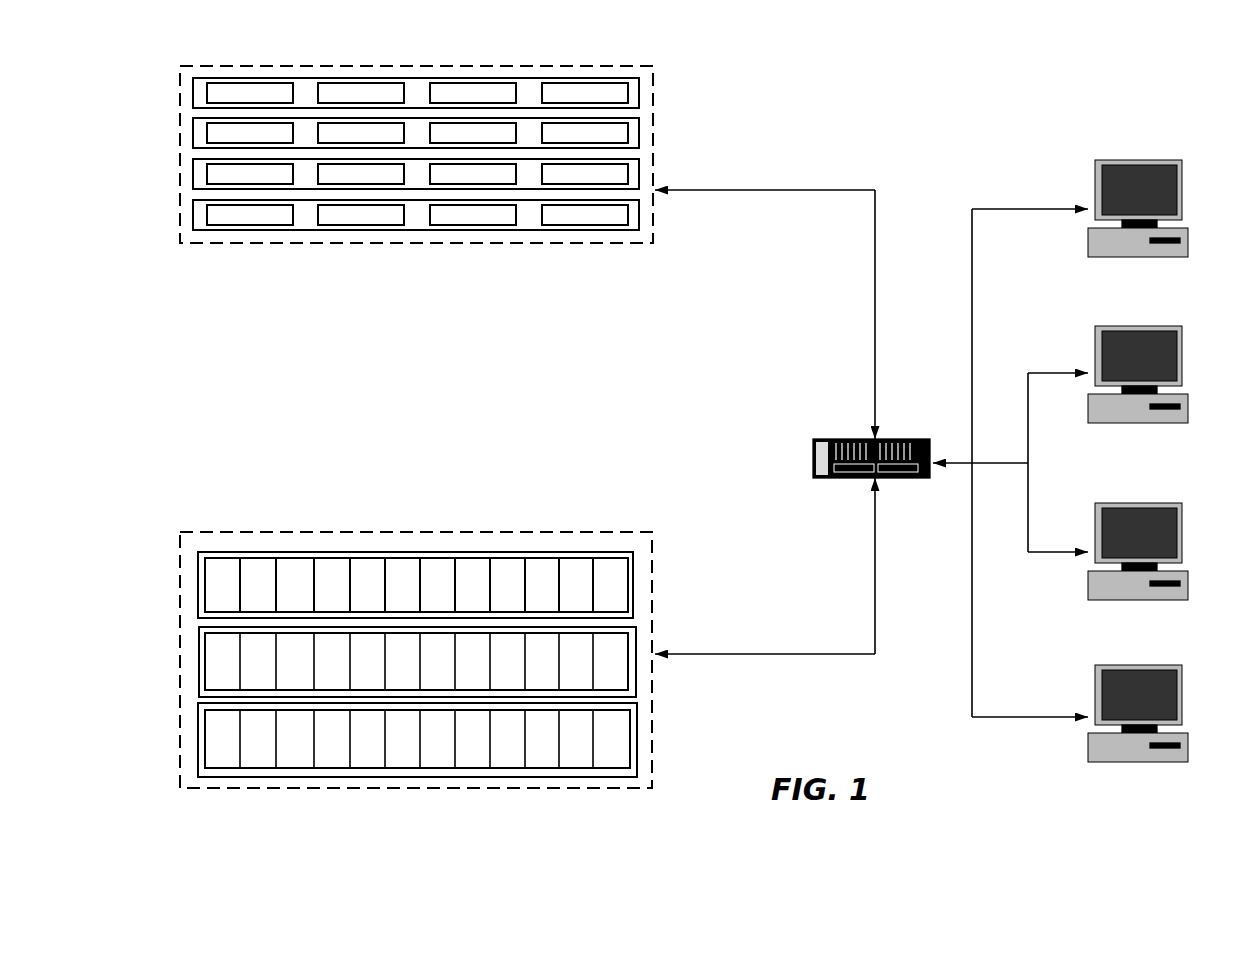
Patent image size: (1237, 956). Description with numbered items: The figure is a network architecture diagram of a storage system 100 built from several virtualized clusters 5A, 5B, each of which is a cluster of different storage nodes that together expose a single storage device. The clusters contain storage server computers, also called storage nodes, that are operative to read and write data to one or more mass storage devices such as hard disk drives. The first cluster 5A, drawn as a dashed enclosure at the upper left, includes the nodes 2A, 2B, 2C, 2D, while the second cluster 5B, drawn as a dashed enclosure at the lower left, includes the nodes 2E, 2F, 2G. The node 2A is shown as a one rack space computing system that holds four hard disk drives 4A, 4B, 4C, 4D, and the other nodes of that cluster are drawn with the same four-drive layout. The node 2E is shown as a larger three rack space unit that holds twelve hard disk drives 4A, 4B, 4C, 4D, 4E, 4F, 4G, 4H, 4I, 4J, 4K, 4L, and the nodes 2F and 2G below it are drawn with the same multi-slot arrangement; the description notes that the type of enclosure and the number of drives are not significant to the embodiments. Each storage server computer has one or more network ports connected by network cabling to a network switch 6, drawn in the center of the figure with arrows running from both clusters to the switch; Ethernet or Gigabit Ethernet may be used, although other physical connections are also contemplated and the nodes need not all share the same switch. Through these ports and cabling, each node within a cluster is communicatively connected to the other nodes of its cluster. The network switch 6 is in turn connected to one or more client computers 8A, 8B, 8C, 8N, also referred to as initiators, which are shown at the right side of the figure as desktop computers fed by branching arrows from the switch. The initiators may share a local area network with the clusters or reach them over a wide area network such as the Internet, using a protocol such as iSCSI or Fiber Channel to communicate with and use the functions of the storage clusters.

The storage system 100 is at (956, 100).
The virtualized cluster 5A is at (648, 92).
The virtualized cluster 5B is at (643, 552).
The storage server computer 2A is at (630, 103).
The storage server computer 2B is at (630, 146).
The storage server computer 2C is at (630, 188).
The storage server computer 2D is at (630, 229).
The storage server computer 2E is at (633, 572).
The storage server computer 2F is at (636, 636).
The storage server computer 2G is at (637, 712).
The hard disk drive 4A is at (212, 594).
The hard disk drive 4B is at (248, 594).
The hard disk drive 4C is at (285, 594).
The hard disk drive 4D is at (322, 594).
The hard disk drive 4E is at (378, 594).
The hard disk drive 4F is at (412, 594).
The hard disk drive 4G is at (448, 594).
The hard disk drive 4H is at (483, 594).
The hard disk drive 4I is at (514, 594).
The hard disk drive 4J is at (552, 594).
The hard disk drive 4K is at (586, 594).
The hard disk drive 4L is at (620, 594).
The network switch 6 is at (905, 479).
The client computer 8A is at (1172, 257).
The client computer 8B is at (1152, 397).
The client computer 8C is at (1152, 574).
The client computer 8N is at (1153, 736).